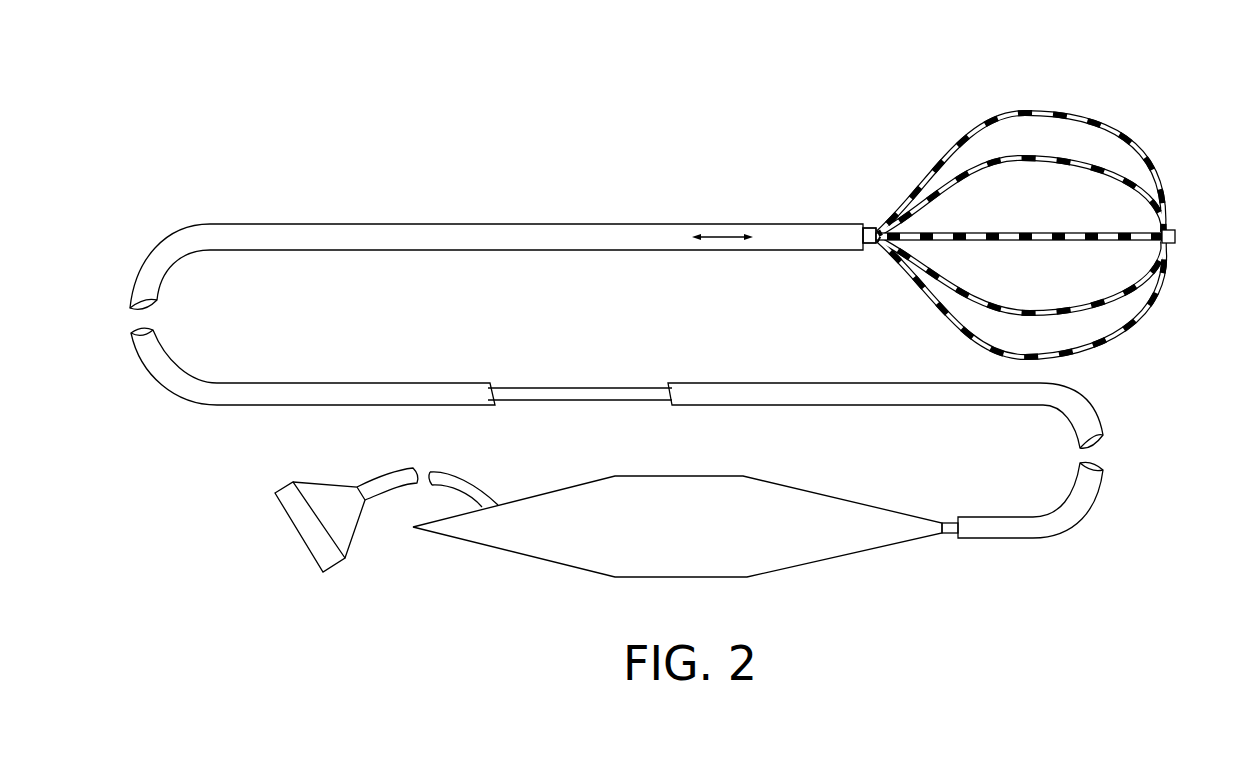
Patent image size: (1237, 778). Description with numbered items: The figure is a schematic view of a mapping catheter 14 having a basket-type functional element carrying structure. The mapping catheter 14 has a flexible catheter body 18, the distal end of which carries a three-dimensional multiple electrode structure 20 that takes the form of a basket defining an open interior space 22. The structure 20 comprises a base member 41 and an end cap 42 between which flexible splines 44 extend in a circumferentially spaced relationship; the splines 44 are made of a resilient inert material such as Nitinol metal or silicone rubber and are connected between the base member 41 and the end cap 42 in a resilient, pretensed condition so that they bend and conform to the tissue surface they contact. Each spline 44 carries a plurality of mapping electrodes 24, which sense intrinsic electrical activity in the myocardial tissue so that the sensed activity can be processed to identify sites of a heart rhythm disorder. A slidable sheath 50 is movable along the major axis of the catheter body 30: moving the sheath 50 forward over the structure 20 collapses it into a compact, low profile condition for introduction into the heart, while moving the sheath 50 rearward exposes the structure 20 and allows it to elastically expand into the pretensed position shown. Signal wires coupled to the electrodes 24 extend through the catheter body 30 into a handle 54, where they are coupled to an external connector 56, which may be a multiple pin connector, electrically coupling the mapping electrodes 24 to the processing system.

The mapping catheter 14 is at (591, 125).
The catheter body 18 is at (875, 224).
The three-dimensional multiple electrode structure 20 is at (1021, 230).
The open interior space 22 is at (1082, 291).
The mapping electrodes 24 is at (1123, 127).
The catheter body 30 is at (1058, 352).
The base member 41 is at (881, 250).
The end cap 42 is at (1178, 235).
The flexible splines 44 is at (948, 147).
The slidable sheath 50 is at (732, 222).
The handle 54 is at (833, 495).
The external connector 56 is at (292, 495).